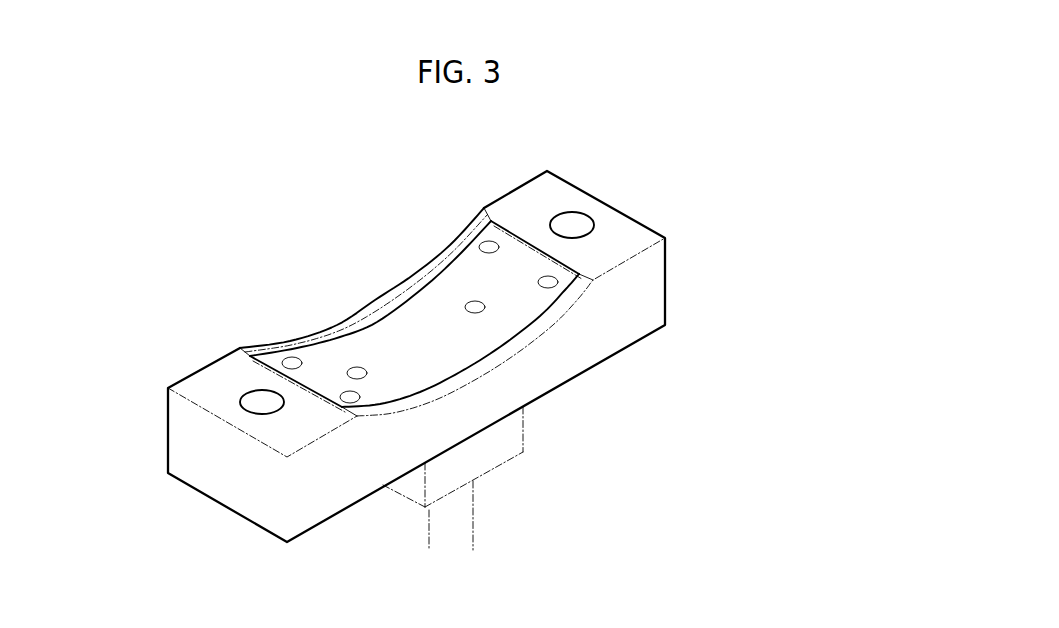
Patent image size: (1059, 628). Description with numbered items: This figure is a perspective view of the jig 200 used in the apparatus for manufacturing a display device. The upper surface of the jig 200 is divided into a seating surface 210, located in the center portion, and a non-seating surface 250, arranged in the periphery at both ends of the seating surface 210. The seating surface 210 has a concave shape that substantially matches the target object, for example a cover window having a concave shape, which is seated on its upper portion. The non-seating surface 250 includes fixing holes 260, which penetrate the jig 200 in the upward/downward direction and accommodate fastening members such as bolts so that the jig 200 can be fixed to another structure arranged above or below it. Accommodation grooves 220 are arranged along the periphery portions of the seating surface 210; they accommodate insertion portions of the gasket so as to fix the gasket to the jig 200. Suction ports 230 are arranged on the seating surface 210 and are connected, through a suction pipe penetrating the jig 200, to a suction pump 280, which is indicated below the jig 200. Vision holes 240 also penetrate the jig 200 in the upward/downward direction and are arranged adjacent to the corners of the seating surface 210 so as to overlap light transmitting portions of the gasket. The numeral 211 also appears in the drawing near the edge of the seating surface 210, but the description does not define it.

The jig 200 is at (688, 250).
The seating surface 210 is at (346, 358).
The step portion 211 is at (373, 310).
The accommodation groove 220 is at (423, 287).
The suction port 230 is at (474, 305).
The vision hole 240 is at (291, 361).
The non-seating surface 250 is at (620, 225).
The fixing hole 260 is at (575, 221).
The suction pump 280 is at (519, 430).